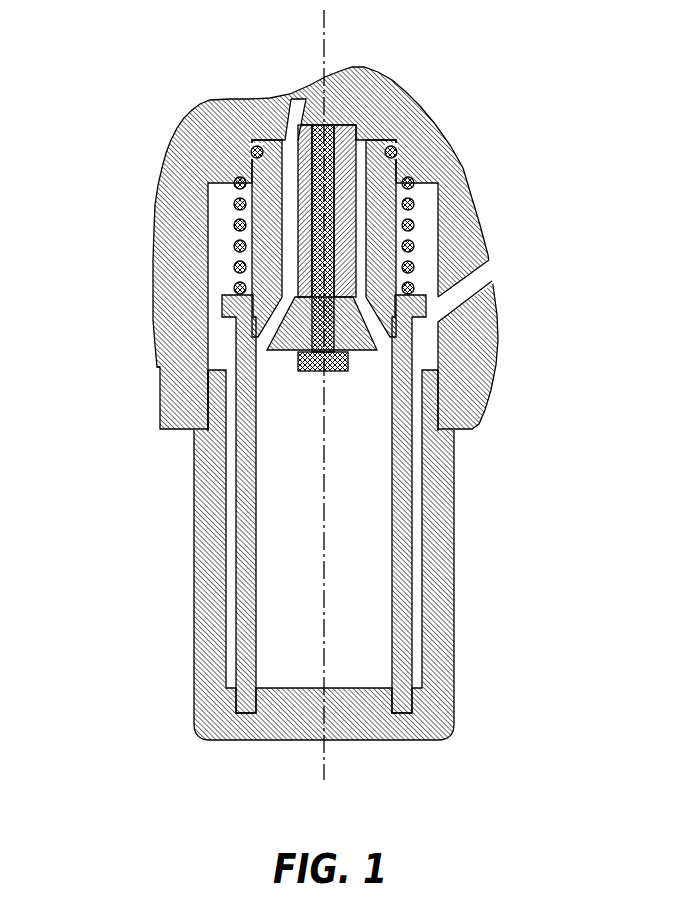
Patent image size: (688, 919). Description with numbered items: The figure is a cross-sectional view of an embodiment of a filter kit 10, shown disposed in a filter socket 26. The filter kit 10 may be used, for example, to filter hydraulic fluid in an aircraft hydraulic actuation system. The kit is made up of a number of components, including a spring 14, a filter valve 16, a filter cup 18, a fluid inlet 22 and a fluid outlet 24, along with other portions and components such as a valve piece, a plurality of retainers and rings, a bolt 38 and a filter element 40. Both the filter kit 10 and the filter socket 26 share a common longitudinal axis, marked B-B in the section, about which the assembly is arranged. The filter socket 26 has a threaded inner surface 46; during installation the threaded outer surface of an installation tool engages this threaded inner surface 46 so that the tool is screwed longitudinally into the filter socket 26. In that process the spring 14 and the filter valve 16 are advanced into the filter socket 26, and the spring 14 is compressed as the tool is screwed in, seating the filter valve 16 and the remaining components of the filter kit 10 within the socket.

The filter kit 10 is at (147, 539).
The spring 14 is at (400, 202).
The filter valve 16 is at (383, 277).
The filter cup 18 is at (443, 500).
The fluid inlet 22 is at (480, 277).
The fluid outlet 24 is at (300, 98).
The filter socket 26 is at (377, 103).
The bolt 38 is at (362, 345).
The filter element 40 is at (400, 620).
The threaded inner surface 46 is at (208, 393).